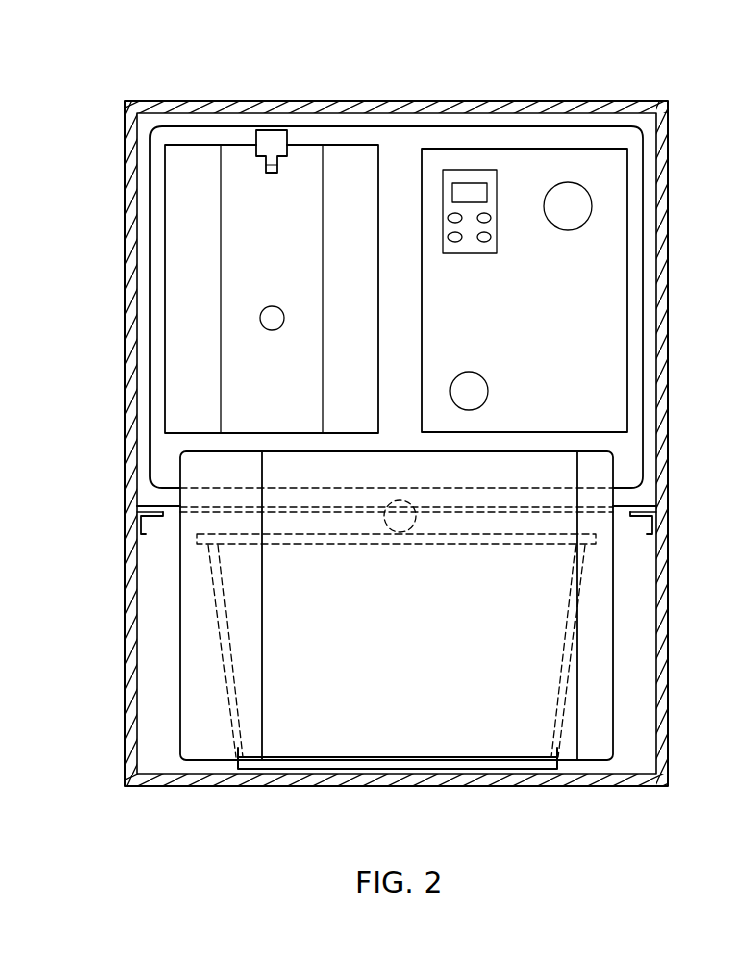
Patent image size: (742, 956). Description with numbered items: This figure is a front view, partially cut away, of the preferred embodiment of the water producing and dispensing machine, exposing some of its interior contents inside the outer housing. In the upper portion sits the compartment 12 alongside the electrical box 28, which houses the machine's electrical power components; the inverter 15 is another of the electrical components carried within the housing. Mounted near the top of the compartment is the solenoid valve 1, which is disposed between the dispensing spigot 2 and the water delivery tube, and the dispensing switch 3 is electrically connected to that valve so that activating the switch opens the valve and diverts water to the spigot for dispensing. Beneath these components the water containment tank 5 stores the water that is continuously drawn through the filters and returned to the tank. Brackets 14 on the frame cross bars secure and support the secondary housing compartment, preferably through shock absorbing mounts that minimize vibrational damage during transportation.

The solenoid valve 1 is at (272, 132).
The spigot 2 is at (279, 166).
The dispensing switch 3 is at (260, 314).
The water containment tank 5 is at (410, 679).
The cooling unit 12 is at (297, 281).
The brackets 14 is at (139, 532).
The inverter 15 is at (207, 466).
The electrical box 28 is at (553, 281).